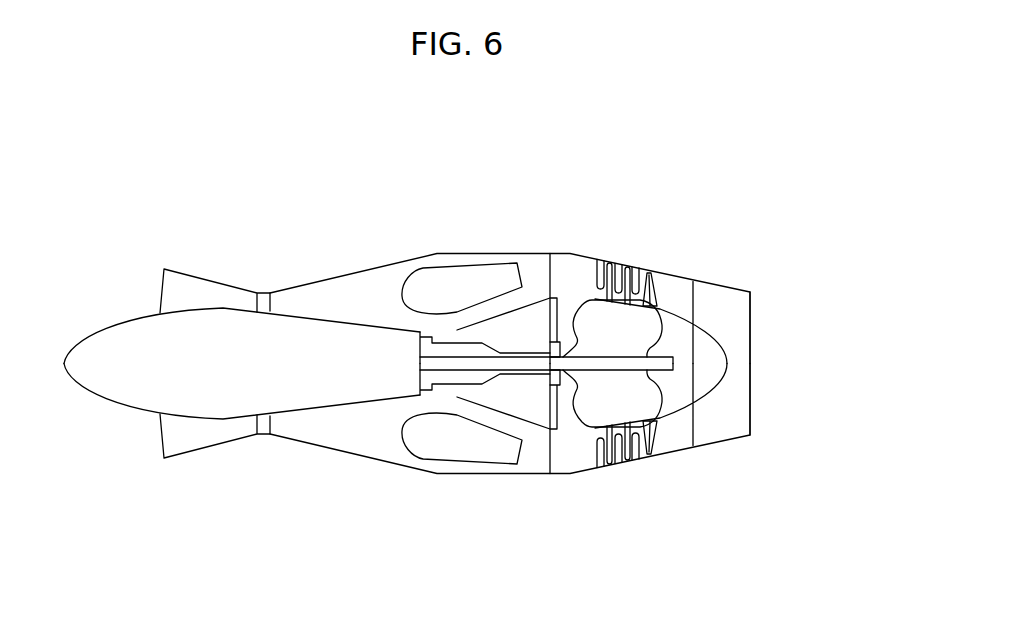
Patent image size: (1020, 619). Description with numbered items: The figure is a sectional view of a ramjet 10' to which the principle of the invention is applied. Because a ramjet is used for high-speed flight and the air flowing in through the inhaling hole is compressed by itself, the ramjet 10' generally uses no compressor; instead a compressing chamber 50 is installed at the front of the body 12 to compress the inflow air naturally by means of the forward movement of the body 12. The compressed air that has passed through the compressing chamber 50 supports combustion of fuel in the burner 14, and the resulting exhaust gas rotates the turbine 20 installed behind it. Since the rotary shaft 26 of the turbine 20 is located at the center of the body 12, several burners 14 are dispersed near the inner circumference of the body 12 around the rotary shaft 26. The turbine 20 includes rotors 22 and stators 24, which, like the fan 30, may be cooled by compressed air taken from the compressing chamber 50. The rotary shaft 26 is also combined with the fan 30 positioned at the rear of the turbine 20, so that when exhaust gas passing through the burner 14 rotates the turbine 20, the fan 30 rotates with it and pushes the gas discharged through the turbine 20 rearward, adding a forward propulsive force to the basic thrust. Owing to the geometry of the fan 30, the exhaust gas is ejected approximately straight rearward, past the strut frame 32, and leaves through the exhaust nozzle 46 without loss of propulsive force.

The ramjet 10' is at (445, 291).
The body 12 is at (598, 262).
The burner 14 is at (447, 288).
The turbine 20 is at (615, 242).
The rotor 22 is at (598, 463).
The stator 24 is at (632, 460).
The rotary shaft 26 is at (435, 363).
The fan 30 is at (650, 275).
The strut frame 32 is at (680, 292).
The exhaust nozzle 46 is at (747, 300).
The compressing chamber 50 is at (192, 442).